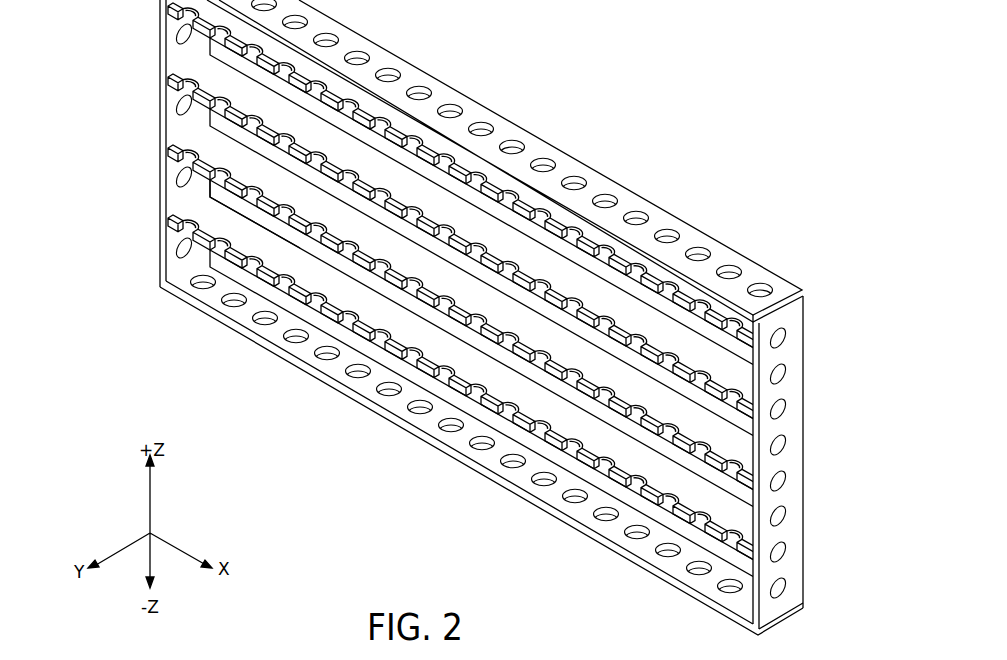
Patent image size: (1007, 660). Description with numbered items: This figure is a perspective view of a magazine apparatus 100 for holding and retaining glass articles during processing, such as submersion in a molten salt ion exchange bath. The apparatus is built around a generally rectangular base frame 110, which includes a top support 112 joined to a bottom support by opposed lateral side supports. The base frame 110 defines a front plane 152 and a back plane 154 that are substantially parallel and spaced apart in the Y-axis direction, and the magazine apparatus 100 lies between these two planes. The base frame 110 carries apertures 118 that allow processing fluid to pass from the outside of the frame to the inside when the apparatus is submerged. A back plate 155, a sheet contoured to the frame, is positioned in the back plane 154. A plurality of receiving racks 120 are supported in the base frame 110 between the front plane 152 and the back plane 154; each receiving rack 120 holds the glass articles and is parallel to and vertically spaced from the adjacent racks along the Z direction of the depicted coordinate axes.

The magazine apparatus 100 is at (720, 151).
The base frame 110 is at (802, 558).
The top support 112 is at (533, 148).
The apertures 118 is at (792, 374).
The receiving racks 120 is at (316, 77).
The front plane 152 is at (538, 512).
The back plane 154 is at (753, 251).
The back plate 155 is at (227, 195).